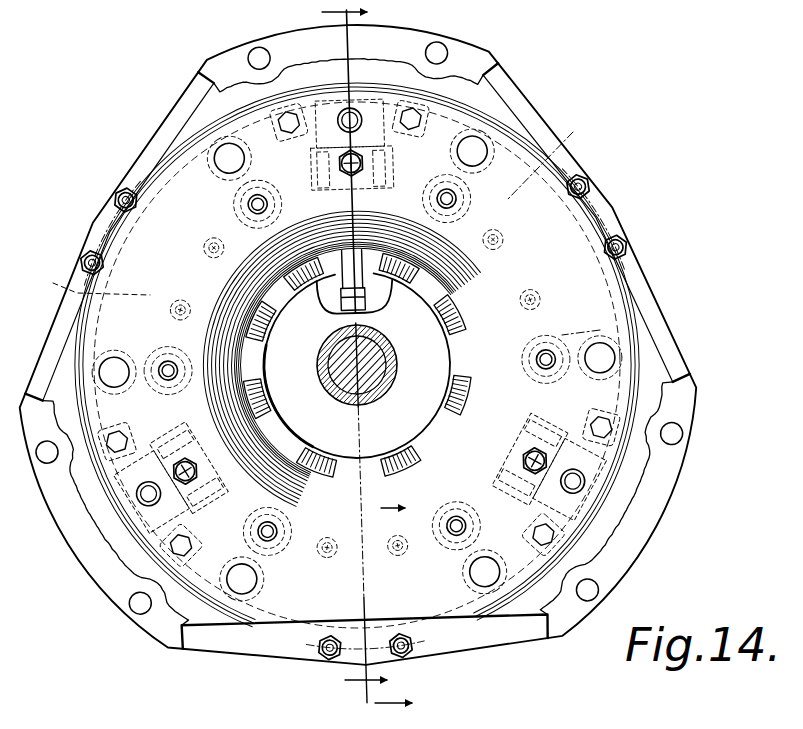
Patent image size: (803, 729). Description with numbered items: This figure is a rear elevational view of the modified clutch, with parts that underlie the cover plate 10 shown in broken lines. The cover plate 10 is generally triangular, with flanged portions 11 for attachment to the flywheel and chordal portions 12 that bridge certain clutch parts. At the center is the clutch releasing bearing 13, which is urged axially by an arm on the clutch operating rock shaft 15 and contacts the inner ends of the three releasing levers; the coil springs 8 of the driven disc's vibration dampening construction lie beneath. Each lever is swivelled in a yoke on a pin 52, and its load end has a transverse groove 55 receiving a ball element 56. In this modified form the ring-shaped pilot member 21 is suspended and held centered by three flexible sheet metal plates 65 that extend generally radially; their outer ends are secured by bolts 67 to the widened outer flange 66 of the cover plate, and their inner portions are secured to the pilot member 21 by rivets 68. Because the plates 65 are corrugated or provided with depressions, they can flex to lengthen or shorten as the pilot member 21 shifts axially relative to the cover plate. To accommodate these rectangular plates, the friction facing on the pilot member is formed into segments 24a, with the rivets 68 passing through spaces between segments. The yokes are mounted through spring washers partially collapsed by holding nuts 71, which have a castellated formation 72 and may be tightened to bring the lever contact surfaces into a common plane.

The coil springs 8 is at (356, 365).
The cover plate 10 is at (357, 340).
The flanged portions 11 is at (357, 343).
The chordal portions 12 is at (366, 361).
The clutch releasing bearing 13 is at (357, 356).
The clutch operating rock shaft 15 is at (368, 368).
The pilot member 21 is at (90, 285).
The friction facing segments 24a is at (566, 225).
The pin 52 is at (357, 363).
The transverse groove 55 is at (354, 281).
The ball element 56 is at (355, 309).
The flexible sheet metal plates 65 is at (357, 364).
The widened outer flange 66 is at (385, 385).
The bolts 67 is at (352, 424).
The rivets 68 is at (357, 407).
The holding nuts 71 is at (355, 316).
The castellated formation 72 is at (203, 471).